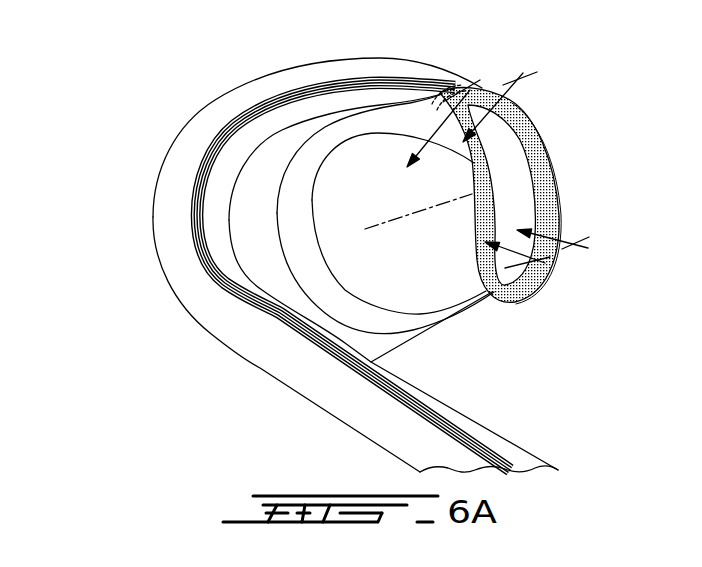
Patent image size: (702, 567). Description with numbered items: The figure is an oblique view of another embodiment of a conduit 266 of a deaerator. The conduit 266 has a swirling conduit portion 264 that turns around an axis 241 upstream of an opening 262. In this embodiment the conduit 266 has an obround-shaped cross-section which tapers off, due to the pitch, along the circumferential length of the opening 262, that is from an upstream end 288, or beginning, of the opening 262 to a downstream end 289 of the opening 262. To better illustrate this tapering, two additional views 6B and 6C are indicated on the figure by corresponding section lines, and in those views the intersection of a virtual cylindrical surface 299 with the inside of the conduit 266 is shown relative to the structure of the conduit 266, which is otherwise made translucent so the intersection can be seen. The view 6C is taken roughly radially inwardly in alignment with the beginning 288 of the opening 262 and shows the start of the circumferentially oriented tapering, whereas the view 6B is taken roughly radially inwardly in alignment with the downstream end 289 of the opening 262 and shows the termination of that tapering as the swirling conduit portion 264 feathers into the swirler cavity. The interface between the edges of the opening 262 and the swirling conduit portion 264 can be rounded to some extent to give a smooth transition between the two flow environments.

The axis 241 is at (388, 224).
The opening 262 is at (548, 165).
The swirling conduit portion 264 is at (240, 152).
The conduit 266 is at (272, 353).
The upstream end of the opening 288 is at (455, 88).
The downstream end of the opening 289 is at (503, 301).
The virtual cylindrical surface 299 is at (287, 227).
The view 6B is at (552, 261).
The view 6C is at (462, 134).